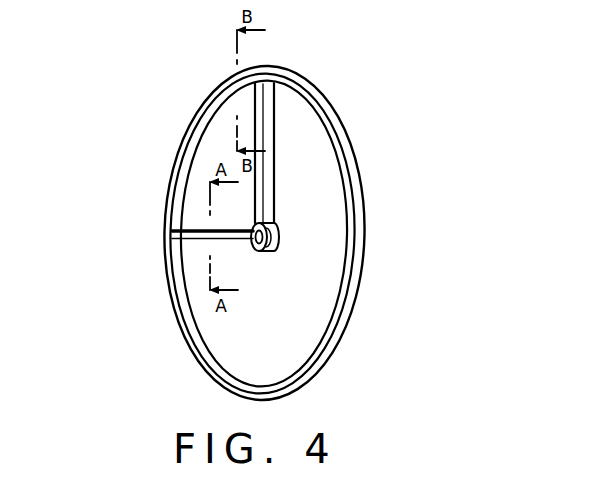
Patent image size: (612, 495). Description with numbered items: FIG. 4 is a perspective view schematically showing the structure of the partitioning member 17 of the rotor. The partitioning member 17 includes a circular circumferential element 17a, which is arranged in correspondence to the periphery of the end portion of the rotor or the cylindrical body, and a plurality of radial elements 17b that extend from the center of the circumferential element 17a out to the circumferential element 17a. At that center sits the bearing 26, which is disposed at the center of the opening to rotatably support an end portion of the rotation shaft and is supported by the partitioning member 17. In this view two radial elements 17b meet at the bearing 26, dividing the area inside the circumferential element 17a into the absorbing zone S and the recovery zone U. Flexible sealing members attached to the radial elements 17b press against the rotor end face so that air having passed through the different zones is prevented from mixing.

The partitioning member 17 is at (286, 206).
The circular circumferential element 17a is at (366, 198).
The radial elements 17b is at (279, 153).
The bearing 26 is at (279, 243).
The recovery zone U is at (211, 146).
The absorbing zone S is at (233, 336).